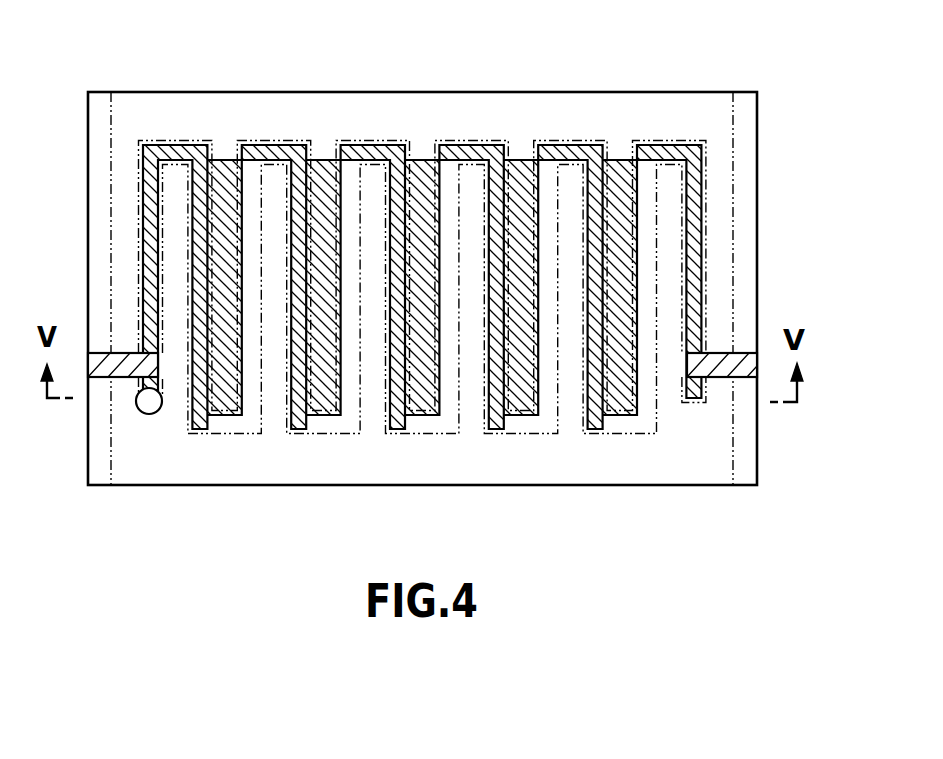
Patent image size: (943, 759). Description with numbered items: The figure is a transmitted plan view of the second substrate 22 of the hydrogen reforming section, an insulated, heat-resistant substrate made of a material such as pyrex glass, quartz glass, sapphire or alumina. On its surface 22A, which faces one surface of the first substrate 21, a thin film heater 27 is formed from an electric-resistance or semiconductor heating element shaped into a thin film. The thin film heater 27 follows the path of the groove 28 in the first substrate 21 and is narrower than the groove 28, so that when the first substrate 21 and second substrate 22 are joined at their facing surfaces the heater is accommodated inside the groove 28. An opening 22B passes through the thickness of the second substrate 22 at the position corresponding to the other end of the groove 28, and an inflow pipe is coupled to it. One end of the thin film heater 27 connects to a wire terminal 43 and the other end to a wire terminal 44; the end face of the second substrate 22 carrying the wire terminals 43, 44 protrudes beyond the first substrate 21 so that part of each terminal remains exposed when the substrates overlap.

The first substrate 21 is at (112, 422).
The second substrate 22 is at (765, 125).
The surface of the second substrate 22A is at (618, 117).
The opening 22B is at (158, 409).
The thin film heater 27 is at (350, 180).
The groove 28 is at (576, 423).
The wire terminal 43 is at (720, 370).
The wire terminal 44 is at (128, 352).